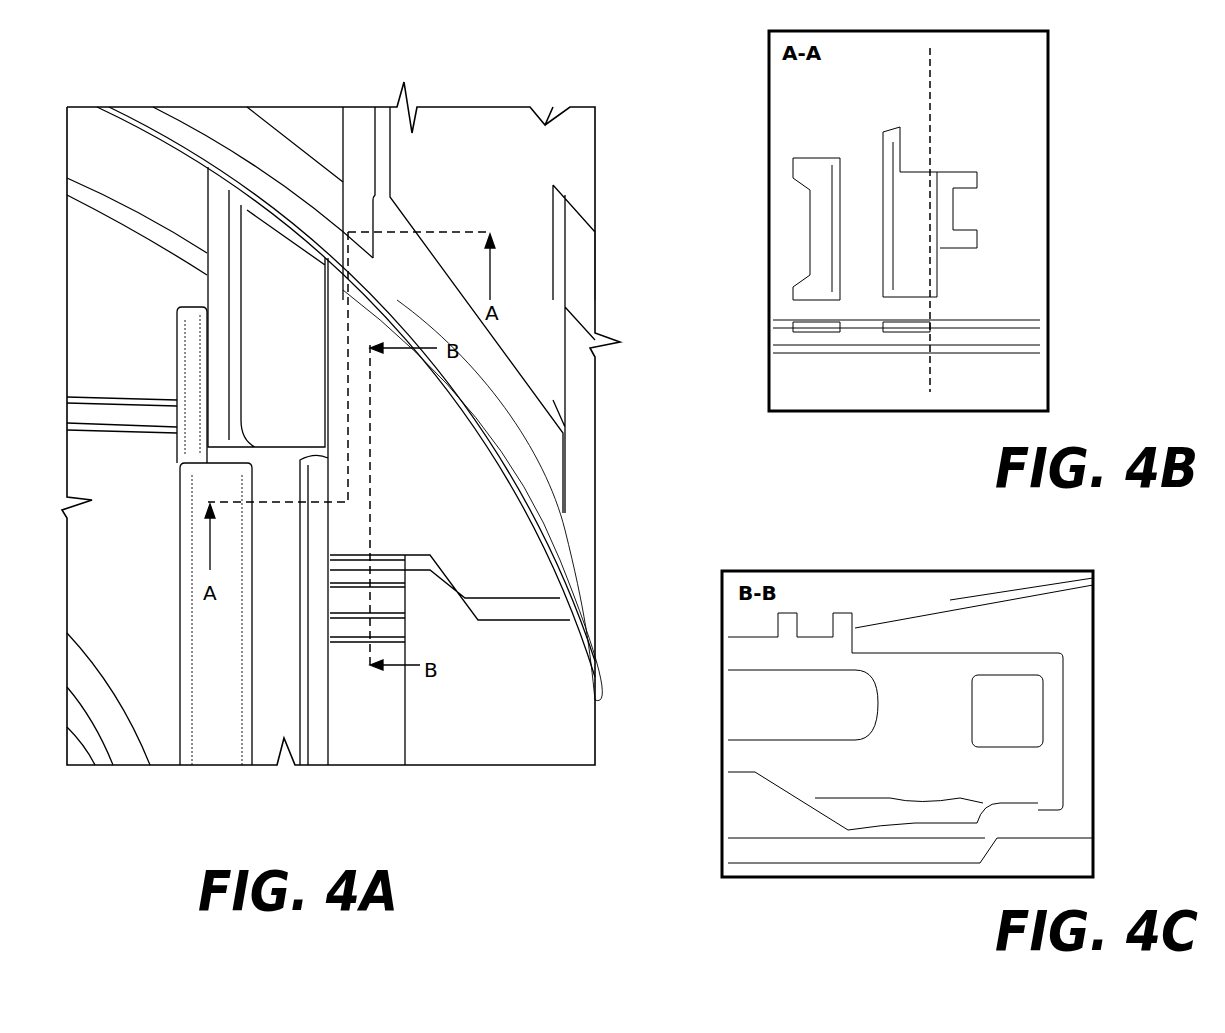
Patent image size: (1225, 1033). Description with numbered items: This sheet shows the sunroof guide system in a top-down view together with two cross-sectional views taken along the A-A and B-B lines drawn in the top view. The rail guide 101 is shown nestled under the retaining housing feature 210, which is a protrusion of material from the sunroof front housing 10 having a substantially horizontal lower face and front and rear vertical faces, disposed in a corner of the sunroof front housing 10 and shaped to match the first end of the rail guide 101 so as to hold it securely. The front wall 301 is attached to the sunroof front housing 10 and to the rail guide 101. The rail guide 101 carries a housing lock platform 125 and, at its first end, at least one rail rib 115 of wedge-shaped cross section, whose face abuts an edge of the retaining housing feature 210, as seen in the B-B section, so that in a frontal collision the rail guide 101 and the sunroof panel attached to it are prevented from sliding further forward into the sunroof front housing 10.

In FIG. 4A, the sunroof front housing 10 is at (572, 150).
In FIG. 4B, the sunroof front housing 10 is at (937, 300).
In FIG. 4C, the sunroof front housing 10 is at (1040, 832).
In FIG. 4A, the rail guide 101 is at (388, 750).
In FIG. 4C, the rail guide 101 is at (835, 757).
In FIG. 4A, the rail rib 115 is at (396, 574).
In FIG. 4C, the rail rib 115 is at (850, 612).
In FIG. 4A, the housing lock platform 125 is at (512, 383).
In FIG. 4B, the housing lock platform 125 is at (970, 182).
In FIG. 4A, the retaining housing feature 210 is at (488, 520).
In FIG. 4B, the retaining housing feature 210 is at (923, 158).
In FIG. 4C, the retaining housing feature 210 is at (1027, 618).
In FIG. 4A, the front wall 301 is at (217, 748).
In FIG. 4B, the front wall 301 is at (826, 207).